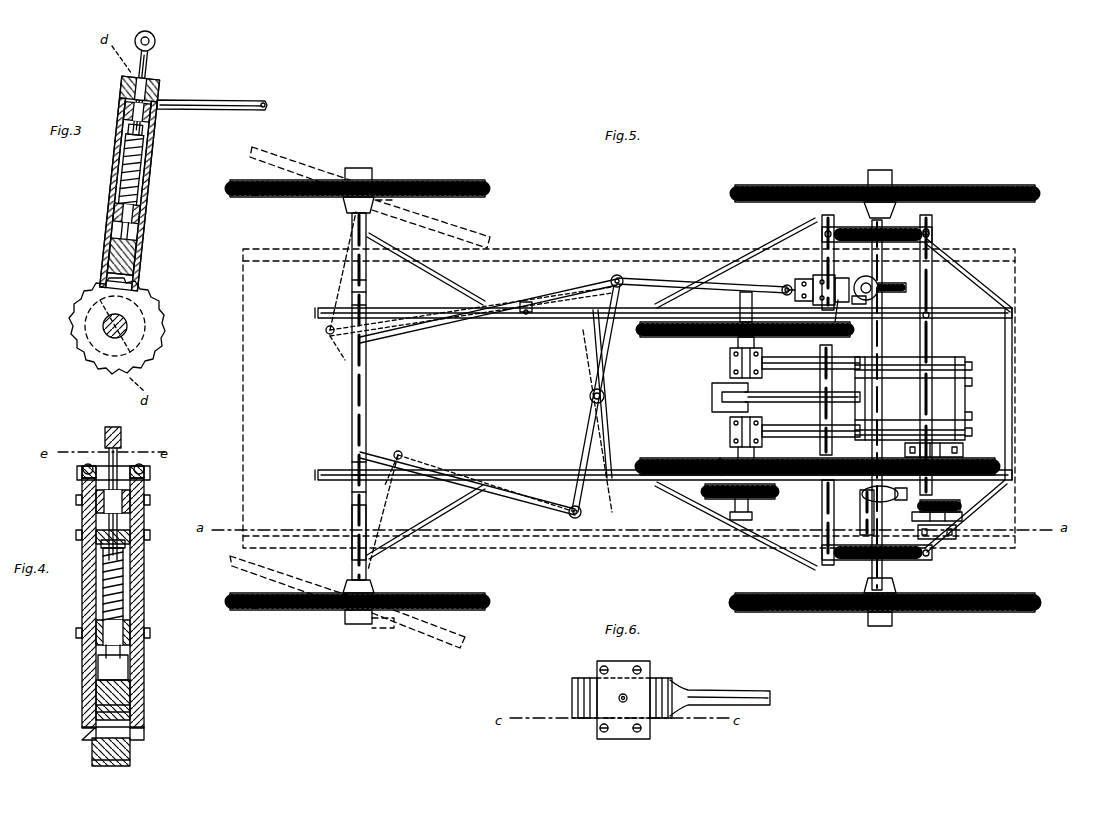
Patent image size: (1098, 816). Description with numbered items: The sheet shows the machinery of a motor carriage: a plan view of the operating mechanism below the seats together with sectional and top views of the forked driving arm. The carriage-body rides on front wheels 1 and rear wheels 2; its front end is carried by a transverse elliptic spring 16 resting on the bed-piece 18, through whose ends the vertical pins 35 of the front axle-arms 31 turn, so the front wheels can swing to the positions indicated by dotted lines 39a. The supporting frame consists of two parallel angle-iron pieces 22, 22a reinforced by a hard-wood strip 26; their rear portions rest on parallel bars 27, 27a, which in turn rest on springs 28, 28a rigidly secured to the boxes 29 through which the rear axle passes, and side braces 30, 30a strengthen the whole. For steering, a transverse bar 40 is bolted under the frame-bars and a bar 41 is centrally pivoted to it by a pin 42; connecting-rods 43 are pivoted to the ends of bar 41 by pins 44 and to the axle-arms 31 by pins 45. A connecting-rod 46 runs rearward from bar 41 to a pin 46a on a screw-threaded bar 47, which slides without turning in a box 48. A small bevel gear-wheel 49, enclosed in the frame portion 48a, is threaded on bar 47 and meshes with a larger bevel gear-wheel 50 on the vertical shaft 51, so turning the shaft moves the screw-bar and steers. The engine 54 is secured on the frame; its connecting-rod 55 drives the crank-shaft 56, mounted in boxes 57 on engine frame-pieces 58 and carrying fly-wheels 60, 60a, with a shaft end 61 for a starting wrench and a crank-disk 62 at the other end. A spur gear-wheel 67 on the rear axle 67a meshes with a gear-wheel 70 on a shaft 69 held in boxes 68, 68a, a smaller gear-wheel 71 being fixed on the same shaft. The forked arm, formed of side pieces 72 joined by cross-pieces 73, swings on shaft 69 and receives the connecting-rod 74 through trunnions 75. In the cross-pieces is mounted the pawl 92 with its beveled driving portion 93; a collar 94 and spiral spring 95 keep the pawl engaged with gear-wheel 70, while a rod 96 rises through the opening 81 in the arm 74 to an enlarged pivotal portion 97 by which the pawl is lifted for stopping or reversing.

In FIG. 5, the front wheels 1 is at (448, 168).
In FIG. 5, the rear wheels 2 is at (794, 186).
In FIG. 5, the transverse elliptic spring 16 is at (366, 385).
In FIG. 5, the bed-piece 18 is at (352, 522).
In FIG. 5, the longitudinal angle-iron frame-piece 22 is at (497, 318).
In FIG. 5, the longitudinal angle-iron frame-piece 22a is at (424, 481).
In FIG. 5, the hard-wood reinforcing strip 26 is at (550, 318).
In FIG. 5, the parallel bar 27 is at (932, 302).
In FIG. 5, the parallel bar 27a is at (822, 520).
In FIG. 5, the spring 28 is at (892, 232).
In FIG. 5, the spring 28a is at (888, 568).
In FIG. 5, the box 29 is at (872, 245).
In FIG. 5, the side brace 30 is at (428, 272).
In FIG. 5, the side brace 30a is at (786, 255).
In FIG. 5, the axle-arm 31 is at (328, 283).
In FIG. 5, the vertical pin 35 is at (862, 496).
In FIG. 5, the turned wheel position (dotted lines) 39a is at (292, 157).
In FIG. 5, the transverse bar 40 is at (607, 425).
In FIG. 5, the pivoted bar 41 is at (578, 442).
In FIG. 5, the pin or bolt 42 is at (605, 396).
In FIG. 5, the connecting-rod 43 is at (428, 334).
In FIG. 5, the pin 44 is at (616, 275).
In FIG. 5, the pin 45 is at (322, 340).
In FIG. 5, the connecting-rod 46 is at (672, 283).
In FIG. 5, the pin 46a is at (786, 284).
In FIG. 5, the screw-threaded longitudinally-movable bar 47 is at (892, 284).
In FIG. 5, the box 48 is at (795, 294).
In FIG. 5, the frame portion 48a is at (812, 276).
In FIG. 5, the small bevel gear-wheel 49 is at (842, 302).
In FIG. 5, the larger bevel gear-wheel 50 is at (876, 280).
In FIG. 5, the vertical shaft 51 is at (870, 298).
In FIG. 5, the engine or motor 54 is at (910, 385).
In FIG. 5, the connecting-rod 55 is at (780, 396).
In FIG. 5, the crank-shaft 56 is at (730, 424).
In FIG. 5, the box 57 is at (730, 360).
In FIG. 5, the engine frame-piece 58 is at (770, 367).
In FIG. 5, the fly-wheel 60 is at (692, 338).
In FIG. 5, the fly-wheel 60a is at (655, 458).
In FIG. 5, the shaft end 61 is at (746, 290).
In FIG. 5, the crank-arm or crank-disk 62 is at (715, 492).
In FIG. 5, the spur gear-wheel 67 is at (820, 447).
In FIG. 5, the rear axle 67a is at (862, 520).
In FIG. 5, the box 68 is at (965, 450).
In FIG. 5, the box 68a is at (956, 531).
In FIG. 5, the shaft 69 is at (955, 500).
In FIG. 3, the spur gear-wheel 70 is at (75, 304).
In FIG. 4, the spur gear-wheel 70 is at (92, 752).
In FIG. 5, the spur gear-wheel 70 is at (995, 465).
In FIG. 6, the spur gear-wheel 70 is at (572, 695).
In FIG. 5, the smaller gear-wheel 71 is at (962, 516).
In FIG. 3, the side pieces of forked arm 72 is at (150, 190).
In FIG. 4, the side pieces of forked arm 72 is at (146, 606).
In FIG. 3, the cross-piece 73 is at (156, 112).
In FIG. 4, the cross-piece 73 is at (125, 548).
In FIG. 3, the connecting-rod 74 is at (205, 100).
In FIG. 6, the connecting-rod 74 is at (728, 692).
In FIG. 4, the pin or trunnion 75 is at (76, 500).
In FIG. 3, the vertical elongated opening 81 is at (124, 96).
In FIG. 3, the pawl 92 is at (150, 193).
In FIG. 4, the pawl 92 is at (83, 585).
In FIG. 3, the driving portion 93 is at (126, 252).
In FIG. 4, the driving portion 93 is at (135, 688).
In FIG. 3, the collar 94 is at (150, 222).
In FIG. 4, the collar 94 is at (135, 640).
In FIG. 3, the spiral spring 95 is at (128, 178).
In FIG. 4, the spiral spring 95 is at (124, 565).
In FIG. 3, the rod 96 is at (146, 71).
In FIG. 4, the rod 96 is at (108, 462).
In FIG. 3, the enlarged pivotal portion 97 is at (156, 41).
In FIG. 4, the enlarged pivotal portion 97 is at (105, 430).